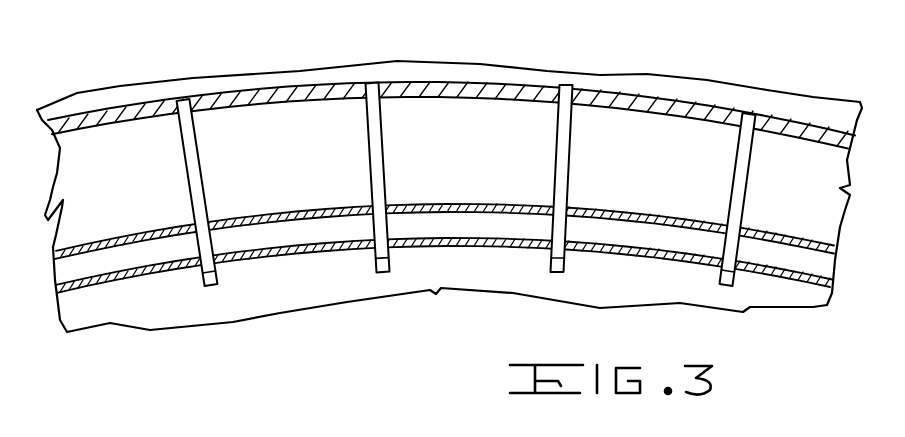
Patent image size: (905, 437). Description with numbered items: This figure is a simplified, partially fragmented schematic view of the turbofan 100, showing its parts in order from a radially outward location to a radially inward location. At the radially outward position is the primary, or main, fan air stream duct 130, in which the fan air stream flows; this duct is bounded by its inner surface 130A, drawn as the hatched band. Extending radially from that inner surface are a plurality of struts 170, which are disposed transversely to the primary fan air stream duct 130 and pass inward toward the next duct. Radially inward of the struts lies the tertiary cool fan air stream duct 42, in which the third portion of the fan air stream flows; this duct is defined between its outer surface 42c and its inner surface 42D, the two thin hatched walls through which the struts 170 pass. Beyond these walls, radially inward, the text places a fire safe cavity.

The turbofan 100 is at (450, 57).
The primary fan air stream duct 130 is at (566, 69).
The inner surface 130A is at (124, 118).
The struts 170 is at (197, 163).
The tertiary cool fan air stream duct 42 is at (444, 247).
The outer surface 42c is at (183, 217).
The inner surface 42D is at (175, 270).